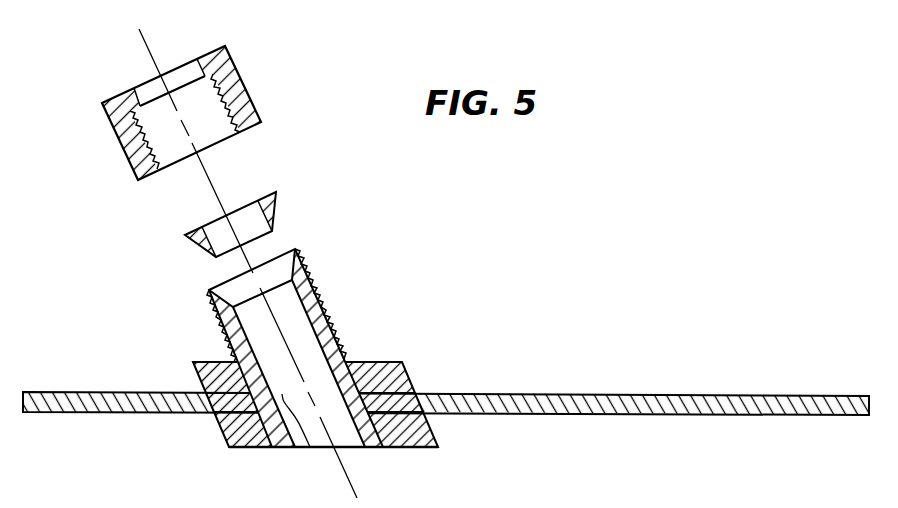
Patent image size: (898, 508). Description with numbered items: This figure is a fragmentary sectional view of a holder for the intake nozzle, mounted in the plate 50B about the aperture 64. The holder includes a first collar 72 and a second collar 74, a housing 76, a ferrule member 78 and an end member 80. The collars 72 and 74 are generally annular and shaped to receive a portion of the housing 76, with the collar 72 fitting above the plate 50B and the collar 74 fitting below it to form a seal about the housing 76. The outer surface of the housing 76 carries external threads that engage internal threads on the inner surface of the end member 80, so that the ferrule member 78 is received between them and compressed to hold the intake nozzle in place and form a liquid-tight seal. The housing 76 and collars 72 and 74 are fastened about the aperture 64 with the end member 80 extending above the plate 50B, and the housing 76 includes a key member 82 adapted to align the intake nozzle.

The plate 50B is at (618, 398).
The aperture 64 is at (253, 405).
The first collar 72 is at (193, 373).
The second collar 74 is at (434, 435).
The housing 76 is at (328, 323).
The ferrule member 78 is at (277, 203).
The end member 80 is at (258, 104).
The key member 82 is at (311, 448).